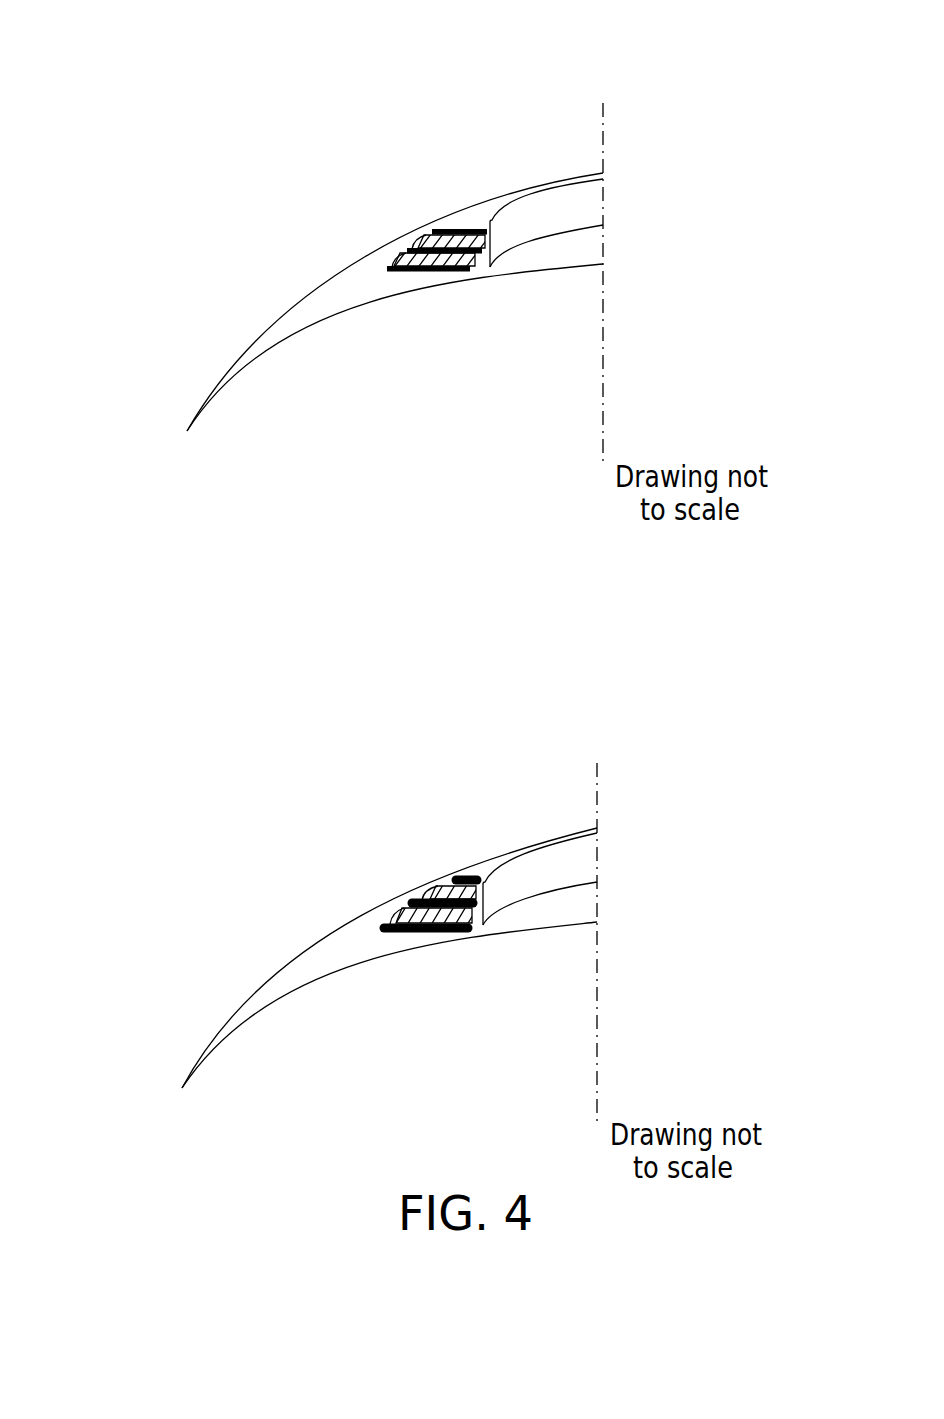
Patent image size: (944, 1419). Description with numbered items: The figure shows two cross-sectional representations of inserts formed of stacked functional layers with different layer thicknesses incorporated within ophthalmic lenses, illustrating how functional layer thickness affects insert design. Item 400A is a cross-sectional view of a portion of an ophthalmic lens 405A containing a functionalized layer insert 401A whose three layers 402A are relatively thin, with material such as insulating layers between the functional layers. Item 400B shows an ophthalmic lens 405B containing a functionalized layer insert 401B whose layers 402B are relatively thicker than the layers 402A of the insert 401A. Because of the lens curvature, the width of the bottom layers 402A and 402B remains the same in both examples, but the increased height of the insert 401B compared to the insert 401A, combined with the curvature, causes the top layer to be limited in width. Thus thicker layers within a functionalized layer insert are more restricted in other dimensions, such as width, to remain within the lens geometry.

The cross-sectional view of a portion of an ophthalmic lens 400A is at (267, 273).
The functionalized layer insert 401A is at (457, 225).
The layers 402A is at (433, 226).
The ophthalmic lens 405A is at (563, 177).
The item depicting an ophthalmic lens 400B is at (262, 922).
The functionalized layer insert 401B is at (474, 868).
The layers 402B is at (448, 873).
The ophthalmic lens 405B is at (548, 838).